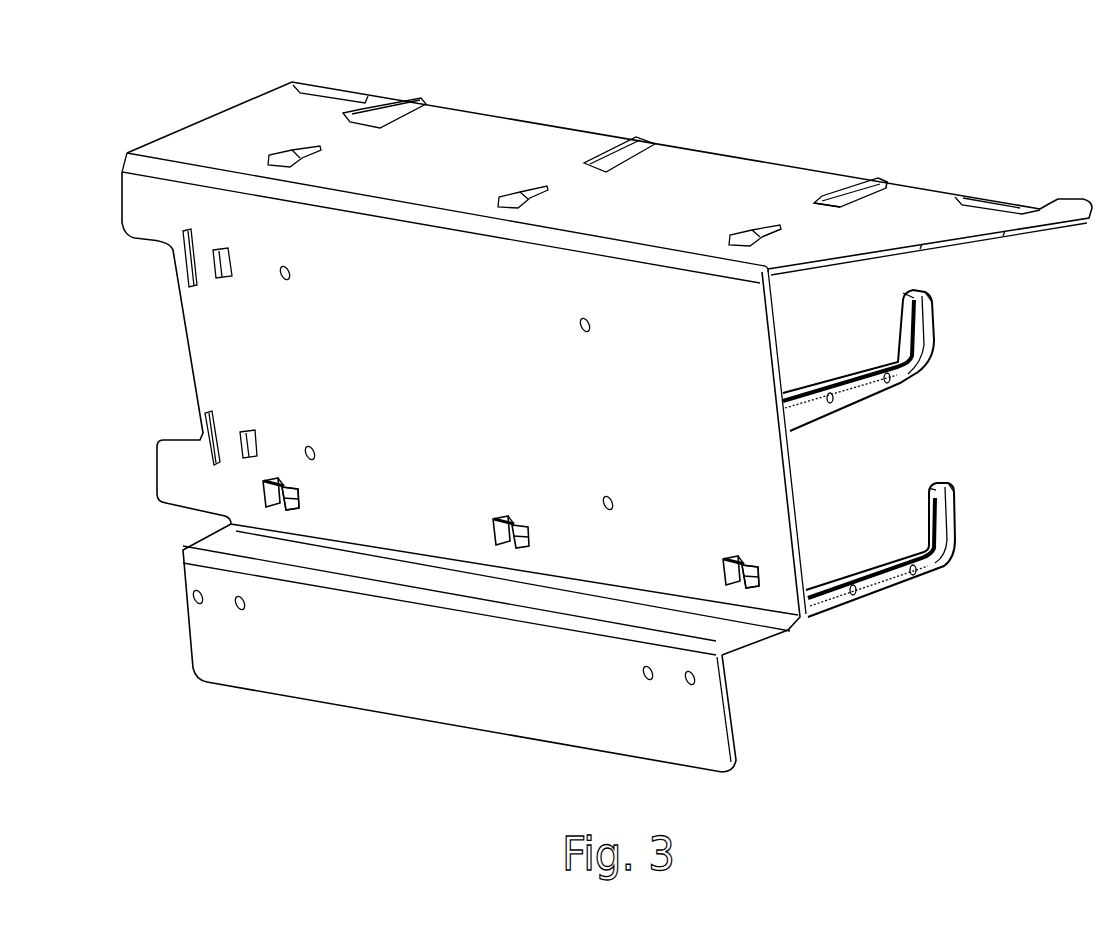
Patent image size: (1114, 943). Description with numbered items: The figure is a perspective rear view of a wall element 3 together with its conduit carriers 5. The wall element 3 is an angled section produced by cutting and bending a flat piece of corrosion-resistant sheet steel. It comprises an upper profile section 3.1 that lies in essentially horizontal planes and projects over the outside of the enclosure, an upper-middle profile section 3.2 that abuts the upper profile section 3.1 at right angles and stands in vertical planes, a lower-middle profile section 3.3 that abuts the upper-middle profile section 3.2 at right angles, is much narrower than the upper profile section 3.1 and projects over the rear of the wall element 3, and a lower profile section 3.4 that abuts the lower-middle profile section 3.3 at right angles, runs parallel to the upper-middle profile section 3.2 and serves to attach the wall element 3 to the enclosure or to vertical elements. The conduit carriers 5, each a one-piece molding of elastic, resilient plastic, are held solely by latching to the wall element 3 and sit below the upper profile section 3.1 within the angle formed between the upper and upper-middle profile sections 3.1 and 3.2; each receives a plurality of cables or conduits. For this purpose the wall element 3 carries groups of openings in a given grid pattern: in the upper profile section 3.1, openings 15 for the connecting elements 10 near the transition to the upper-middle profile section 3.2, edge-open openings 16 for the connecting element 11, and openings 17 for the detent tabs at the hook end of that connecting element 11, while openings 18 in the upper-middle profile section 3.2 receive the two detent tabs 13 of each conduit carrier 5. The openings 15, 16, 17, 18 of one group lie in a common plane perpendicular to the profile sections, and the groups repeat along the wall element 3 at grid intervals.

The wall element 3 is at (983, 160).
The upper profile section 3.1 is at (497, 130).
The upper-middle profile section 3.2 is at (212, 332).
The lower-middle profile section 3.3 is at (733, 623).
The lower profile section 3.4 is at (207, 628).
The conduit carrier 5 is at (993, 540).
The connecting element 10 is at (287, 152).
The connecting element 11 is at (380, 113).
The detent tab 13 is at (258, 492).
The opening 15 is at (764, 227).
The opening 16 is at (884, 180).
The opening 17 is at (846, 203).
The opening 18 is at (281, 482).